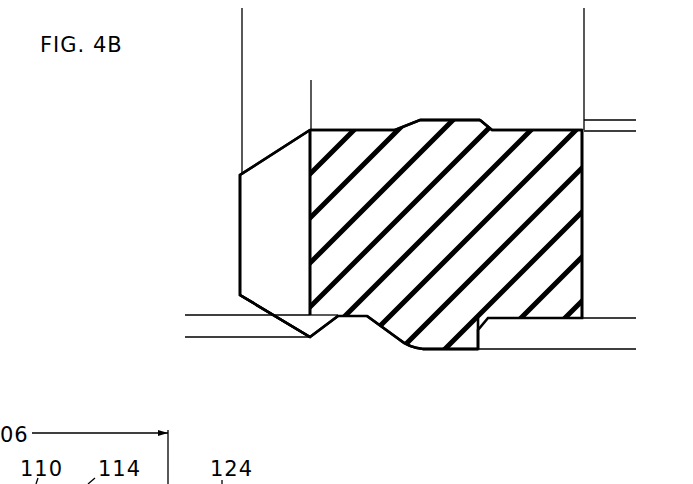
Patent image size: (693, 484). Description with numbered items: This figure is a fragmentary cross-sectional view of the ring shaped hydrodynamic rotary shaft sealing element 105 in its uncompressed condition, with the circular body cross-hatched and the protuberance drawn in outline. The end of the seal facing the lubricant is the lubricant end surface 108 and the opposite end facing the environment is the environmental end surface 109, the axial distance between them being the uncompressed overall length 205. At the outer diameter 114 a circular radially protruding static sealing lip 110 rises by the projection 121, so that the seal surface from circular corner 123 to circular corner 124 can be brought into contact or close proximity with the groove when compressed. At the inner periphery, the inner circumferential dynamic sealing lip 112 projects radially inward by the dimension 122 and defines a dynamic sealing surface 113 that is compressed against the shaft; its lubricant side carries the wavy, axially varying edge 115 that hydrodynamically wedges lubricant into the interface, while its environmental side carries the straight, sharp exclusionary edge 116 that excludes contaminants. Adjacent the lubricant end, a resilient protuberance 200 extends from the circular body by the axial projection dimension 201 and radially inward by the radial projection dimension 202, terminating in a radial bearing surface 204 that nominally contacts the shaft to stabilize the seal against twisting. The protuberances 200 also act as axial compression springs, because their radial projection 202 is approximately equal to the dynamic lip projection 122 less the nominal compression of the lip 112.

The hydrodynamic rotary shaft sealing element 105 is at (508, 228).
The lubricant end surface 108 is at (310, 220).
The environmental end surface 109 is at (582, 260).
The static sealing lip 110 is at (440, 128).
The dynamic sealing lip 112 is at (445, 332).
The dynamic sealing surface 113 is at (455, 349).
The outer diameter 114 is at (455, 120).
The wavy axially varying edge 115 is at (397, 338).
The straight sharp exclusionary edge 116 is at (478, 349).
The projection of the static sealing lip 121 is at (629, 100).
The projection of the dynamic sealing lip 122 is at (627, 295).
The circular corner 123 is at (310, 130).
The circular corner 124 is at (583, 131).
The resilient protuberances 200 is at (273, 212).
The axial projection dimension 201 is at (338, 86).
The radial projection dimension 202 is at (188, 290).
The radial bearing surface 204 is at (310, 337).
The uncompressed overall length 205 is at (584, 13).